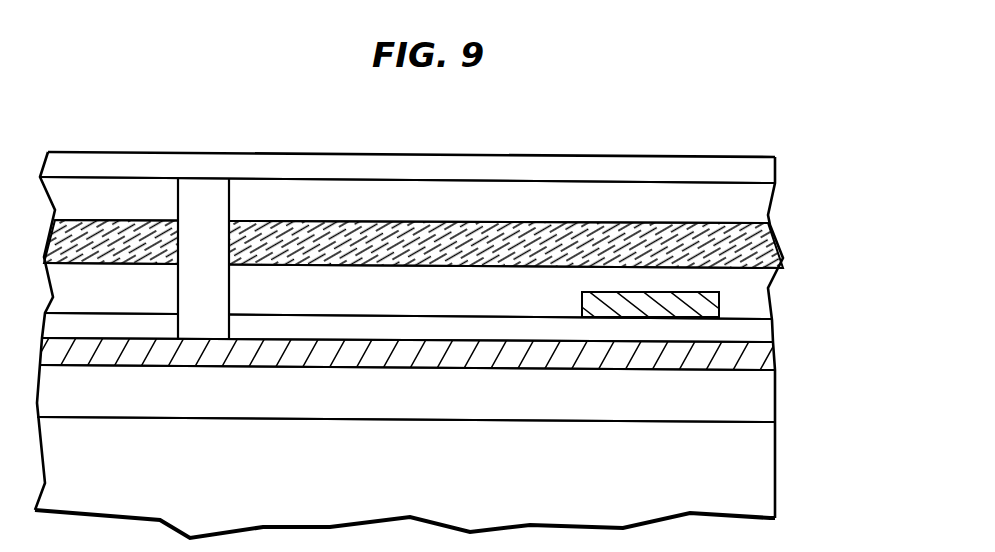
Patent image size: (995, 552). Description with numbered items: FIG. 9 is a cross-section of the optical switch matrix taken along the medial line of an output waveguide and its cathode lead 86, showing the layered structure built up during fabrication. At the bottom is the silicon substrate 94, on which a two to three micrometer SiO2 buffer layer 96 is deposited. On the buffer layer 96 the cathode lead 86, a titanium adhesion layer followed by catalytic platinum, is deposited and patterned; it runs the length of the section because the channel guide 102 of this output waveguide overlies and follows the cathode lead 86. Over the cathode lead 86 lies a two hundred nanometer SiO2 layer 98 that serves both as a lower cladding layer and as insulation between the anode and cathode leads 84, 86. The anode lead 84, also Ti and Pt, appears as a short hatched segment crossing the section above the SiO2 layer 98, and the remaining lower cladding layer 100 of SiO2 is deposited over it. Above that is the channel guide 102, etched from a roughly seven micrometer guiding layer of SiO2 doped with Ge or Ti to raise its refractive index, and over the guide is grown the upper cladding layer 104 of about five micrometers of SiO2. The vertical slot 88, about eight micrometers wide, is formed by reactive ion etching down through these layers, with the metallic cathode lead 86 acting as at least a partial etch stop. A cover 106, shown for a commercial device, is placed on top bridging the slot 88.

The anode lead 84 is at (582, 300).
The cathode lead 86 is at (762, 352).
The slot 88 is at (216, 257).
The silicon substrate 94 is at (752, 483).
The buffer layer 96 is at (777, 400).
The SiO2 layer 98 is at (762, 333).
The lower cladding layer 100 is at (770, 291).
The channel guide 102 is at (783, 245).
The upper cladding layer 104 is at (777, 203).
The cover 106 is at (777, 167).